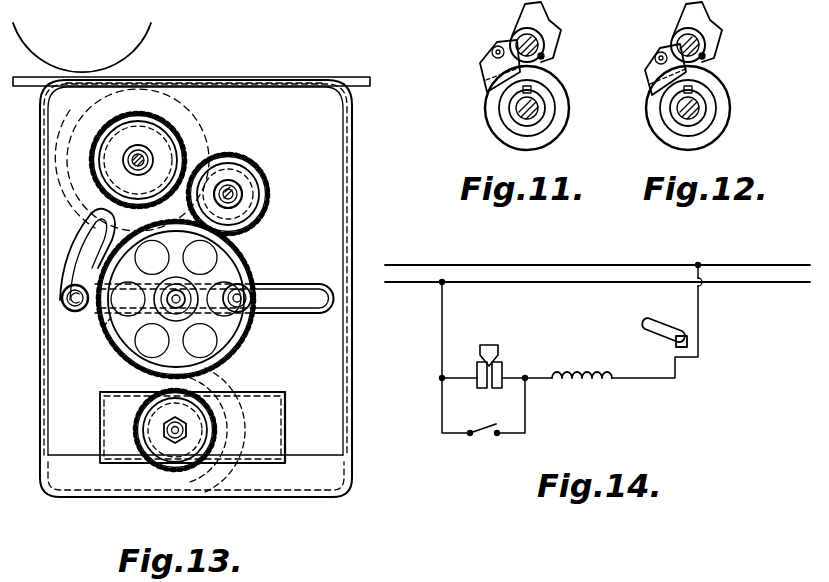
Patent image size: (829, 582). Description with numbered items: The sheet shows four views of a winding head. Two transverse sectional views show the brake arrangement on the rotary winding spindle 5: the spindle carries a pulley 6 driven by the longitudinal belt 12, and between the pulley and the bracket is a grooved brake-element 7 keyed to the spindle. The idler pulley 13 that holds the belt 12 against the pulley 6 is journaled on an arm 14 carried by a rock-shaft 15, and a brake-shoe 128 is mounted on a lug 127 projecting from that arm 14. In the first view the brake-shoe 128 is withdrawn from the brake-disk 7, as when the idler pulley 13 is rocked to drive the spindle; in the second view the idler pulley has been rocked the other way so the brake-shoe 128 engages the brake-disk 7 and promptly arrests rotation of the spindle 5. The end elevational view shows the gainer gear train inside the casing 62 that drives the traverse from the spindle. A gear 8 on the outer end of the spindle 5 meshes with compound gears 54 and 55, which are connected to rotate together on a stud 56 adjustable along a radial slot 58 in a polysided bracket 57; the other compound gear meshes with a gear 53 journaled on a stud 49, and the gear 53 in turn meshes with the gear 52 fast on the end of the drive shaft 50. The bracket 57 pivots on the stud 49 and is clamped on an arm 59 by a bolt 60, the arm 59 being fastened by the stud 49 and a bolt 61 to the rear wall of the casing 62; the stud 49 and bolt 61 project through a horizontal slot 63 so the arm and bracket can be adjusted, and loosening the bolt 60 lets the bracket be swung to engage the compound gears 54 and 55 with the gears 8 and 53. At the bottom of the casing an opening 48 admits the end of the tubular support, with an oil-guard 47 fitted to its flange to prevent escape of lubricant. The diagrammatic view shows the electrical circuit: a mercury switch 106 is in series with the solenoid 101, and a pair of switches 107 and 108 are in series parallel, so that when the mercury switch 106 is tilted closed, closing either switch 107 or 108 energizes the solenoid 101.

In FIG. 13, the winding spindle 5 is at (140, 156).
In FIG. 11, the winding spindle 5 is at (537, 113).
In FIG. 12, the winding spindle 5 is at (698, 115).
In FIG. 13, the pulley 6 is at (206, 150).
In FIG. 11, the grooved brake-element 7 is at (559, 95).
In FIG. 12, the grooved brake-element 7 is at (720, 95).
In FIG. 13, the gear 8 is at (106, 126).
In FIG. 13, the belt 12 is at (352, 77).
In FIG. 13, the idler pulley 13 is at (147, 46).
In FIG. 11, the arm 14 is at (551, 28).
In FIG. 12, the arm 14 is at (710, 28).
In FIG. 11, the rock-shaft 15 is at (520, 37).
In FIG. 12, the rock-shaft 15 is at (680, 45).
In FIG. 13, the oil-guard 47 is at (115, 421).
In FIG. 13, the opening 48 is at (286, 402).
In FIG. 13, the stud 49 is at (181, 308).
In FIG. 13, the drive shaft 50 is at (171, 433).
In FIG. 13, the gear 52 is at (221, 430).
In FIG. 13, the gear 53 is at (238, 360).
In FIG. 13, the compound gear 54 is at (259, 190).
In FIG. 13, the compound gear 55 is at (263, 198).
In FIG. 13, the stud 56 is at (247, 210).
In FIG. 13, the polysided bracket 57 is at (113, 207).
In FIG. 13, the radial slot 58 is at (247, 172).
In FIG. 13, the arm 59 is at (104, 326).
In FIG. 13, the bolt 60 is at (60, 297).
In FIG. 13, the bolt 61 is at (251, 322).
In FIG. 13, the casing 62 is at (351, 196).
In FIG. 13, the horizontal slot 63 is at (297, 288).
In FIG. 14, the solenoid 101 is at (582, 380).
In FIG. 14, the mercury switch 106 is at (673, 320).
In FIG. 14, the switch 107 is at (490, 442).
In FIG. 14, the switch 108 is at (508, 367).
In FIG. 11, the lug 127 is at (512, 38).
In FIG. 12, the lug 127 is at (667, 46).
In FIG. 11, the brake-shoe 128 is at (482, 66).
In FIG. 12, the brake-shoe 128 is at (652, 76).